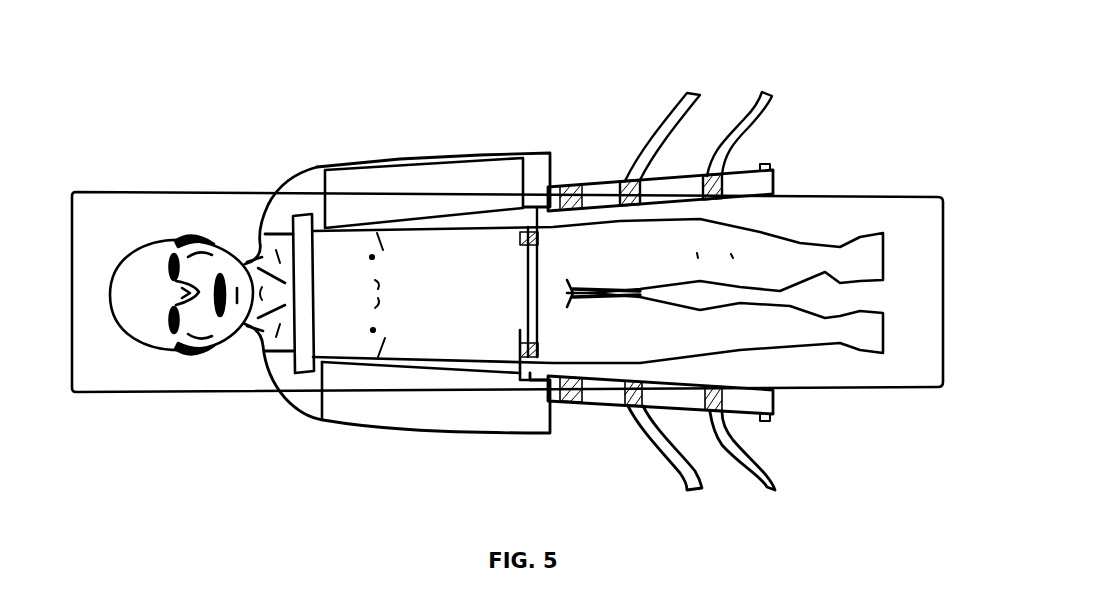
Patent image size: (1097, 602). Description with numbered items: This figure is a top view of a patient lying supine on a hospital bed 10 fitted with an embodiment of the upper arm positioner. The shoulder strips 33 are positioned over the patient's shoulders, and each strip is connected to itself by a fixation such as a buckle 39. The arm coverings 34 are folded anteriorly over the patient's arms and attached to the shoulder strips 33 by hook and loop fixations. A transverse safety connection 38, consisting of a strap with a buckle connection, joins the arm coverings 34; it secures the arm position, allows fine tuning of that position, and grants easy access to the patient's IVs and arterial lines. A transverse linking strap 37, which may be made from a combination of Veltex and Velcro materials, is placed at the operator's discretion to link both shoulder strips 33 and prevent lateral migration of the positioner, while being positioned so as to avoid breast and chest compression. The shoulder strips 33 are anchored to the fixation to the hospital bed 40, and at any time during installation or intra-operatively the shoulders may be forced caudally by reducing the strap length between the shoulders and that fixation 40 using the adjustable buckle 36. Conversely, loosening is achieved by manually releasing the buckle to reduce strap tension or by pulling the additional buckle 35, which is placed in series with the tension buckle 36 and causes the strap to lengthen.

The hospital bed 10 is at (103, 203).
The shoulder strips 33 is at (275, 210).
The arm coverings 34 is at (418, 173).
The additional buckle 35 is at (627, 178).
The adjustable buckle 36 is at (712, 173).
The transverse linking strap 37 is at (305, 343).
The transverse safety connection 38 is at (526, 348).
The buckle 39 is at (580, 403).
The fixation to the hospital bed 40 is at (775, 412).